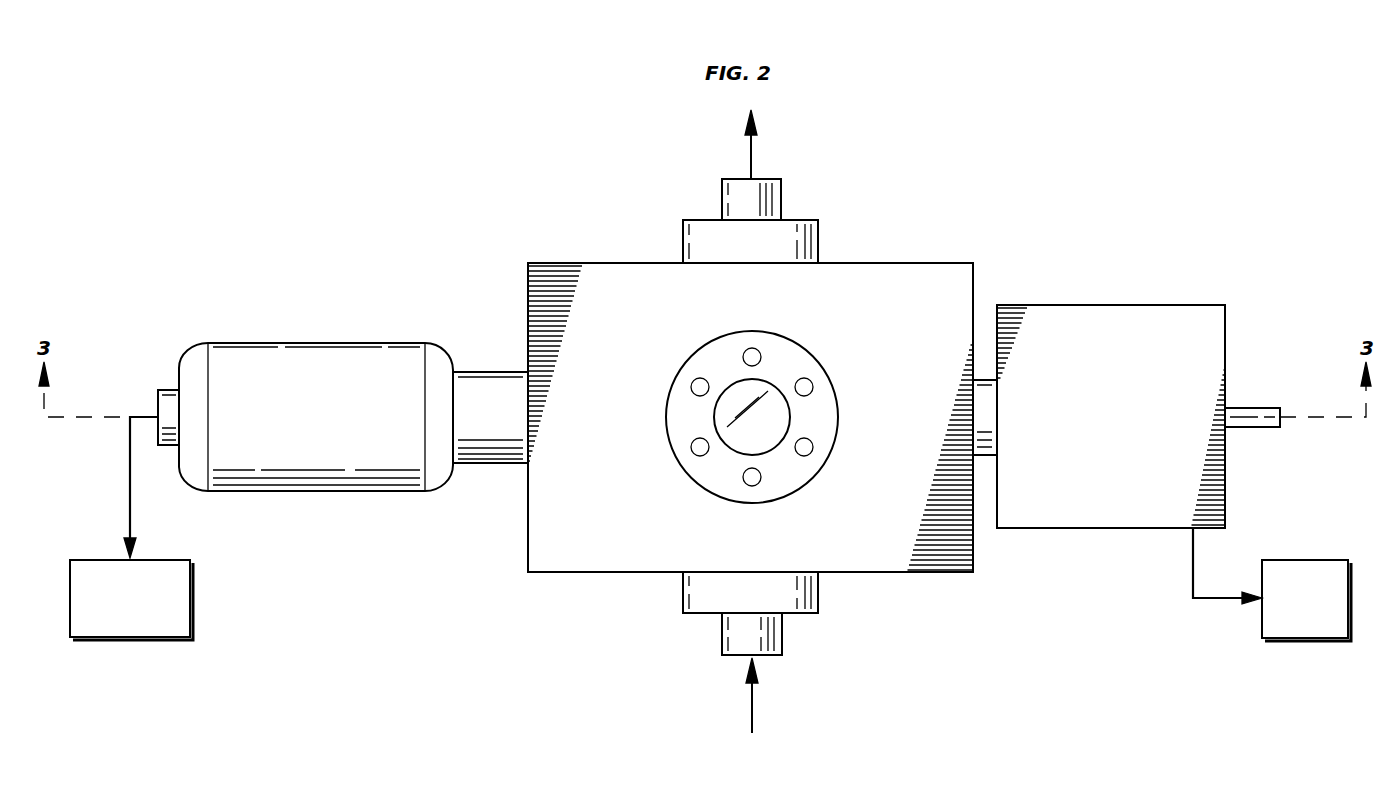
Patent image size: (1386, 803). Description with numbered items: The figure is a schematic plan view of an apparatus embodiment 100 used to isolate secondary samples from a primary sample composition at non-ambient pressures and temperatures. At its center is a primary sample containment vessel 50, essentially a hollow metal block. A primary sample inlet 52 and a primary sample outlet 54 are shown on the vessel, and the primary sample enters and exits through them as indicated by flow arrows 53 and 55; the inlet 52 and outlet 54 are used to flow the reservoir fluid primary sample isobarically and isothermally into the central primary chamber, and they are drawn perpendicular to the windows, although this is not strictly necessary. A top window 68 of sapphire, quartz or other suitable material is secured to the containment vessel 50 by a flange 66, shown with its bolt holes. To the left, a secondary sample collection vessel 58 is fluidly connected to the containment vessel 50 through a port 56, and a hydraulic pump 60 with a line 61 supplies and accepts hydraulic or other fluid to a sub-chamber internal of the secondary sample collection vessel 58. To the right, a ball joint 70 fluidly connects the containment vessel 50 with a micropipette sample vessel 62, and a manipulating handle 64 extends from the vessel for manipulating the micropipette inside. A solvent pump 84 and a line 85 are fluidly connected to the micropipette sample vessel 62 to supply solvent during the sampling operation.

The primary sample containment vessel 50 is at (585, 548).
The primary sample inlet 52 is at (772, 658).
The flow arrow 53 is at (748, 703).
The primary sample outlet 54 is at (771, 180).
The flow arrow 55 is at (750, 153).
The port 56 is at (492, 371).
The secondary sample collection vessel 58 is at (331, 427).
The hydraulic pump 60 is at (145, 610).
The line 61 is at (128, 485).
The micropipette sample vessel 62 is at (1127, 427).
The manipulating handle 64 is at (1262, 407).
The flange 66 is at (818, 355).
The window 68 is at (733, 397).
The ball joint 70 is at (985, 378).
The solvent pump 84 is at (1320, 610).
The line 85 is at (1191, 566).
The apparatus embodiment 100 is at (1040, 193).